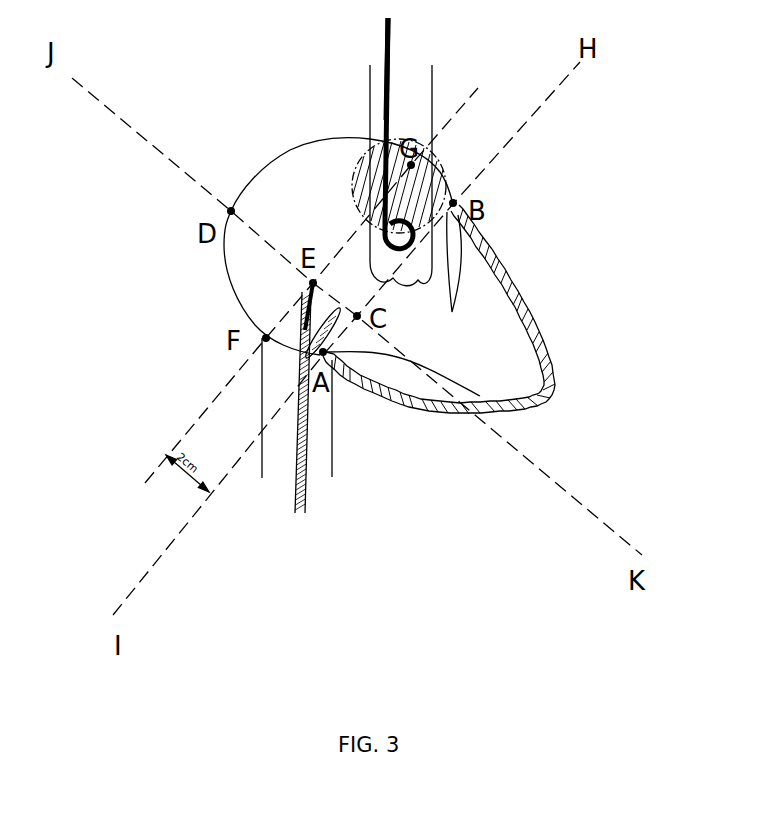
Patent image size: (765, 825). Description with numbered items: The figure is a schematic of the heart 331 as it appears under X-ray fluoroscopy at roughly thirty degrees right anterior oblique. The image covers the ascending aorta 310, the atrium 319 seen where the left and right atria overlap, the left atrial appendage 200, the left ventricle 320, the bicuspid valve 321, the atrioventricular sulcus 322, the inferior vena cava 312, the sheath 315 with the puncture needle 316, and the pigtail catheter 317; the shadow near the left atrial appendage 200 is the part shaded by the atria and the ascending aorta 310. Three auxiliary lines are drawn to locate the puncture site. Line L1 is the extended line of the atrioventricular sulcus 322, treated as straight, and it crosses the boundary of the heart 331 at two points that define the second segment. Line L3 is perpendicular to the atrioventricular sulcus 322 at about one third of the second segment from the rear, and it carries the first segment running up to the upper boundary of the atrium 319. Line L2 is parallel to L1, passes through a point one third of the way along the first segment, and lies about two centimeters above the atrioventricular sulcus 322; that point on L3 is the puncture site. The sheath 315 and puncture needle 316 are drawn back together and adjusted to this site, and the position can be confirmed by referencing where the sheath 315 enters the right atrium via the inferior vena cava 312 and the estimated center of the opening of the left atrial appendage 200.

The left atrial appendage 200 is at (462, 185).
The ascending aorta 310 is at (405, 98).
The inferior vena cava 312 is at (272, 374).
The sheath 315 is at (304, 472).
The puncture needle 316 is at (303, 312).
The pigtail catheter 317 is at (373, 120).
The atrium 319 is at (293, 203).
The left ventricle 320 is at (503, 345).
The bicuspid valve 321 is at (390, 353).
The atrioventricular sulcus 322 is at (348, 340).
The heart 331 is at (528, 563).
The extended line of the atrioventricular sulcus L1 is at (237, 460).
The auxiliary line used to locate the puncture site L2 is at (190, 428).
The auxiliary line perpendicular to the atrioventricular sulcus L3 is at (217, 200).